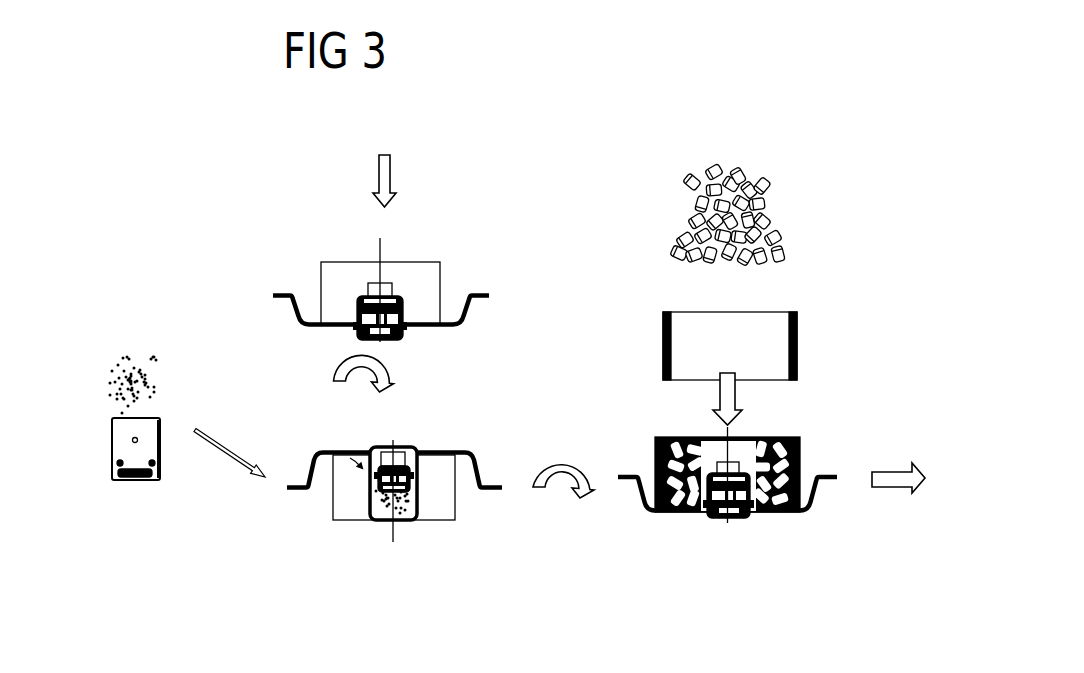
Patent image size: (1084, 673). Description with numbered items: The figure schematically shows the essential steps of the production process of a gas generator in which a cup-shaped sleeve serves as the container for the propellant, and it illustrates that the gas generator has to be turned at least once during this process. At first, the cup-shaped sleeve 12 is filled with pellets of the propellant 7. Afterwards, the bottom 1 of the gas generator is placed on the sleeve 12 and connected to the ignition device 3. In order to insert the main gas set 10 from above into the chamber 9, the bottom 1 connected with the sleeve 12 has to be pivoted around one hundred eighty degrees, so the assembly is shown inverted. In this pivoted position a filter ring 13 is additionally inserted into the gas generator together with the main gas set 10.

The bottom 1 is at (443, 330).
The ignition device 3 is at (403, 307).
The propellant 7 is at (148, 370).
The chamber 9 is at (408, 273).
The main gas set 10 is at (770, 203).
The cup-shaped sleeve 12 is at (162, 463).
The filter ring 13 is at (797, 342).